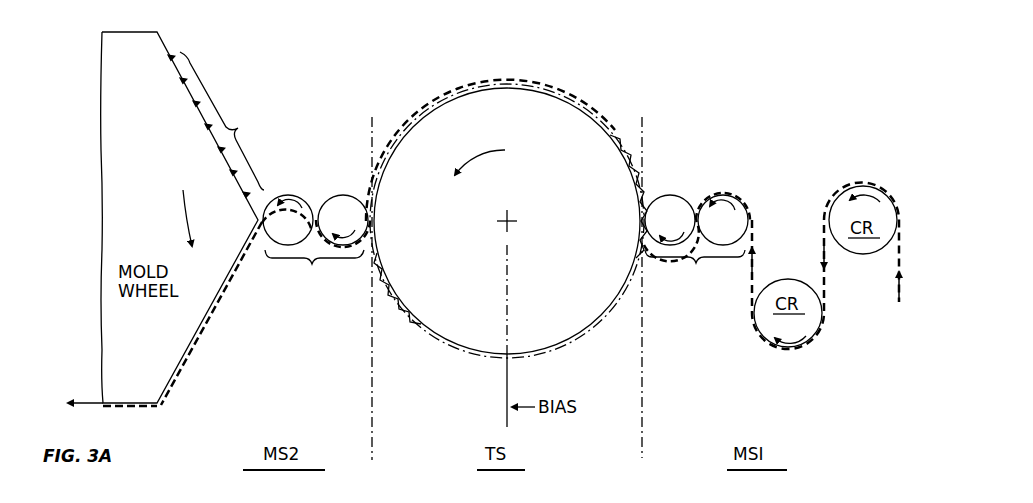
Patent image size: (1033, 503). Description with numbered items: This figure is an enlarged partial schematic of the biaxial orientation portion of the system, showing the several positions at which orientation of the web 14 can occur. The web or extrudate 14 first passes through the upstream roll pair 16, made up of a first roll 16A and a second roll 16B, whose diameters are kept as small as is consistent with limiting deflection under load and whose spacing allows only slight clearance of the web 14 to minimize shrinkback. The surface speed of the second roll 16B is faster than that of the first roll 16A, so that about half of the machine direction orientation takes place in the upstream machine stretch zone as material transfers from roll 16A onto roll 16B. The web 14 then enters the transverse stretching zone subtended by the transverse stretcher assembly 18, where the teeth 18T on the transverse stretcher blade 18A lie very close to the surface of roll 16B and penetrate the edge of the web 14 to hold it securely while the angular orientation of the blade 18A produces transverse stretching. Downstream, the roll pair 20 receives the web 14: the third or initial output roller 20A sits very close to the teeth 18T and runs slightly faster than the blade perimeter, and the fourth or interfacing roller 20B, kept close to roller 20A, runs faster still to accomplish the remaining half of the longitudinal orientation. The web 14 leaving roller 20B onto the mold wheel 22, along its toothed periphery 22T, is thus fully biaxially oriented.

The web 14 is at (287, 196).
The roll pair 16 is at (695, 268).
The first roll 16A is at (730, 215).
The second roll 16B is at (668, 210).
The transverse stretcher assembly 18 is at (585, 95).
The transverse stretcher blade 18A is at (576, 254).
The teeth 18T is at (620, 134).
The roll pair 20 is at (314, 268).
The third or initial output roller 20A is at (332, 205).
The fourth or interfacing roller 20B is at (270, 227).
The mold wheel 22 is at (148, 158).
The mold wheel teeth 22T is at (120, 396).